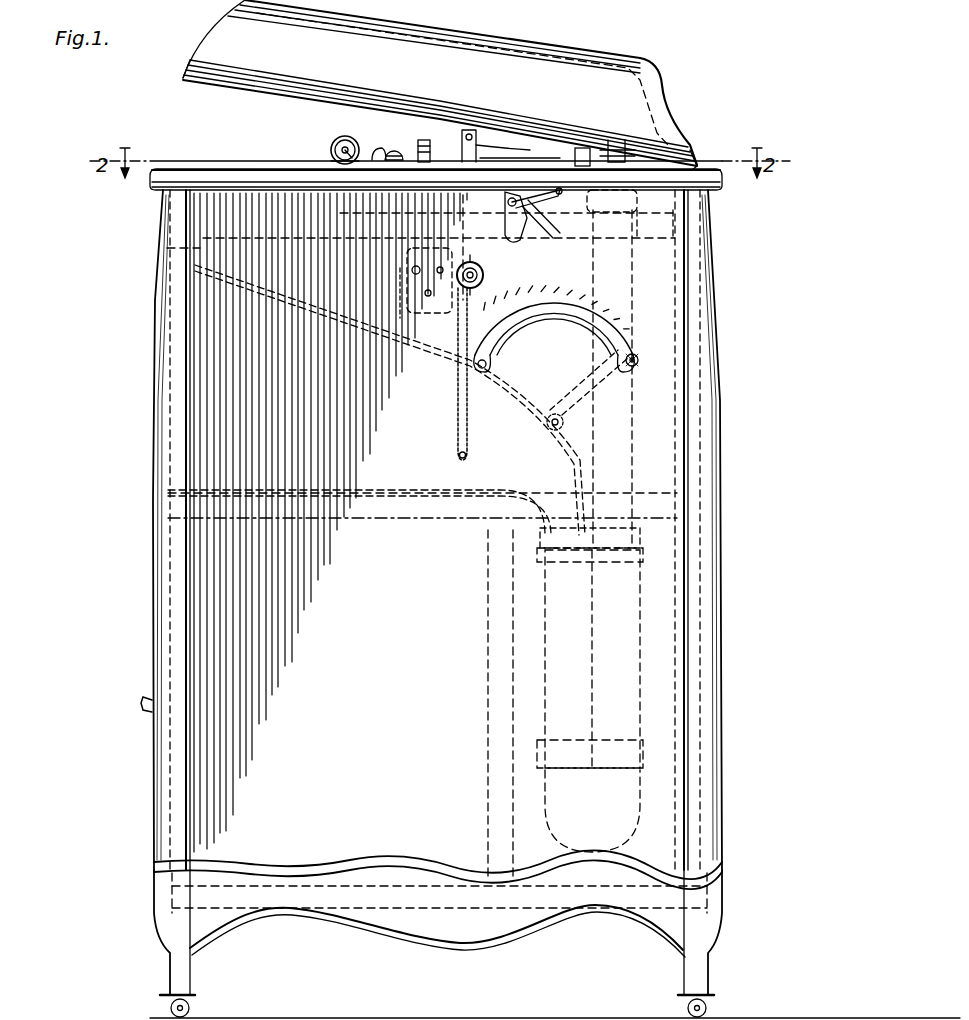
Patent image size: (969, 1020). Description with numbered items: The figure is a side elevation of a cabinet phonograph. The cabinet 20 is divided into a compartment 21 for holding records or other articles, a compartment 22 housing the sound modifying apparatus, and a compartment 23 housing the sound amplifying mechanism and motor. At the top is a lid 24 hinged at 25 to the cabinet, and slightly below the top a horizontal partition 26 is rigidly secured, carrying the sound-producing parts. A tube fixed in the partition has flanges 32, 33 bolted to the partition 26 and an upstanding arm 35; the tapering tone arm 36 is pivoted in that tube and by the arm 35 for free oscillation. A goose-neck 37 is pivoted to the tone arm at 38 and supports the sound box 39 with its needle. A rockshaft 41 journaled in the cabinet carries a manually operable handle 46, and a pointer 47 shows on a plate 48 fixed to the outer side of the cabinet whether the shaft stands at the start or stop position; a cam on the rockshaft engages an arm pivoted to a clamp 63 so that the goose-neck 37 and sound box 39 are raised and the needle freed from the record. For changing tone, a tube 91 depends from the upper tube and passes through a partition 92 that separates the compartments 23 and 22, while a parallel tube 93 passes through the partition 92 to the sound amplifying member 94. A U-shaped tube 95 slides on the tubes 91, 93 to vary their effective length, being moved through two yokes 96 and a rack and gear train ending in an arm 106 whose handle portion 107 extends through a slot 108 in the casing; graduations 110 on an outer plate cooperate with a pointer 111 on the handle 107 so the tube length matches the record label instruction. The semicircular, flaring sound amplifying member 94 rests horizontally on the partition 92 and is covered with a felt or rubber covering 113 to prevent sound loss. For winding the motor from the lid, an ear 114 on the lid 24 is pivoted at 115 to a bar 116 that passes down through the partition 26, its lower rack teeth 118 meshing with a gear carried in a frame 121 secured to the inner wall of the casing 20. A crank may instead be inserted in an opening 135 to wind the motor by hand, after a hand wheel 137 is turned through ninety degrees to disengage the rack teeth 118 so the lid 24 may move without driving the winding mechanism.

The cabinet 20 is at (688, 418).
The compartment 21 is at (330, 522).
The compartment 22 is at (656, 835).
The compartment 23 is at (393, 461).
The lid 24 is at (635, 67).
The hinge 25 is at (700, 163).
The horizontal partition 26 is at (655, 238).
The flange 32 is at (627, 199).
The flange 33 is at (610, 265).
The upstanding arm 35 is at (616, 148).
The tone arm 36 is at (424, 139).
The goose-neck 37 is at (376, 150).
The pivot 38 is at (393, 150).
The sound box 39 is at (331, 150).
The rockshaft 41 is at (508, 204).
The manually operable handle 46 is at (548, 200).
The pointer 47 is at (538, 220).
The plate 48 is at (528, 240).
The clamp 63 is at (580, 148).
The tube 91 is at (625, 288).
The partition 92 is at (432, 515).
The tube 93 is at (556, 532).
The sound amplifying member 94 is at (505, 395).
The U-shaped tube 95 is at (565, 648).
The yoke 96 is at (632, 560).
The arm 106 is at (590, 385).
The handle portion 107 is at (640, 352).
The slot 108 is at (556, 312).
The graduations 110 is at (605, 318).
The pointer 111 is at (615, 326).
The covering 113 is at (570, 436).
The ear 114 is at (474, 140).
The pivot 115 is at (510, 150).
The bar 116 is at (520, 151).
The rack teeth 118 is at (455, 407).
The frame 121 is at (425, 304).
The opening 135 is at (405, 270).
The hand wheel 137 is at (485, 280).